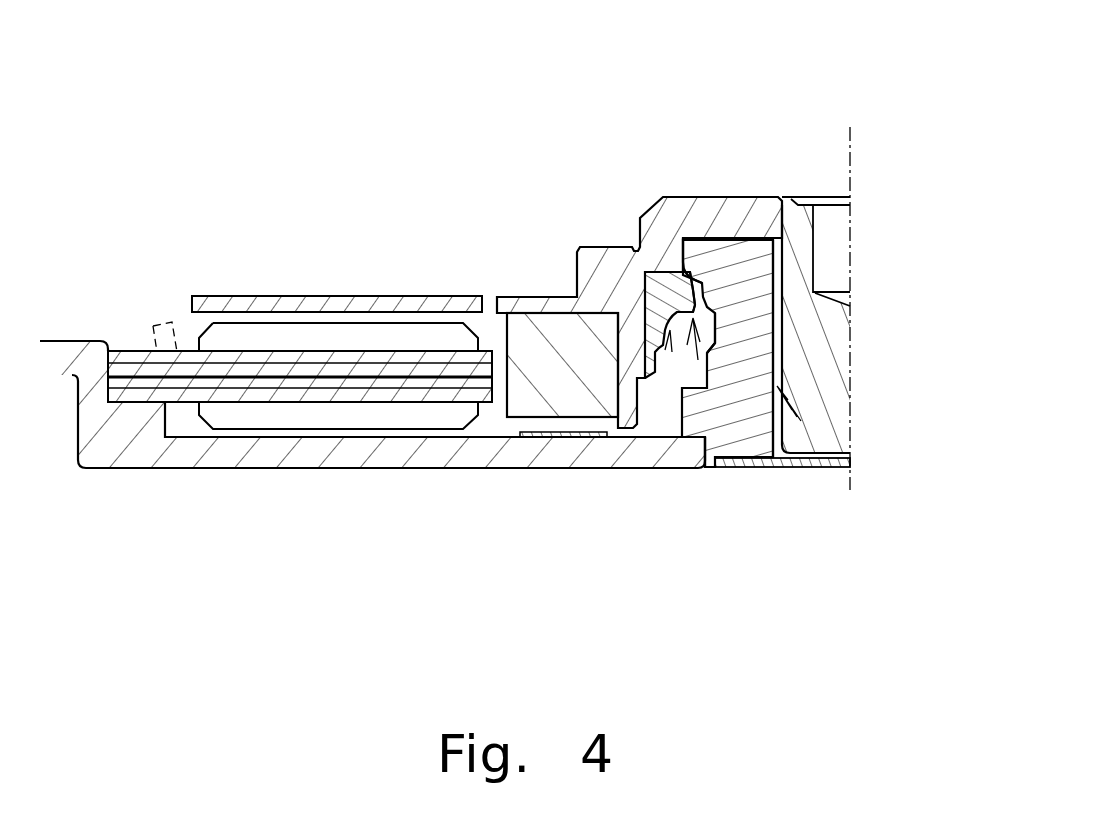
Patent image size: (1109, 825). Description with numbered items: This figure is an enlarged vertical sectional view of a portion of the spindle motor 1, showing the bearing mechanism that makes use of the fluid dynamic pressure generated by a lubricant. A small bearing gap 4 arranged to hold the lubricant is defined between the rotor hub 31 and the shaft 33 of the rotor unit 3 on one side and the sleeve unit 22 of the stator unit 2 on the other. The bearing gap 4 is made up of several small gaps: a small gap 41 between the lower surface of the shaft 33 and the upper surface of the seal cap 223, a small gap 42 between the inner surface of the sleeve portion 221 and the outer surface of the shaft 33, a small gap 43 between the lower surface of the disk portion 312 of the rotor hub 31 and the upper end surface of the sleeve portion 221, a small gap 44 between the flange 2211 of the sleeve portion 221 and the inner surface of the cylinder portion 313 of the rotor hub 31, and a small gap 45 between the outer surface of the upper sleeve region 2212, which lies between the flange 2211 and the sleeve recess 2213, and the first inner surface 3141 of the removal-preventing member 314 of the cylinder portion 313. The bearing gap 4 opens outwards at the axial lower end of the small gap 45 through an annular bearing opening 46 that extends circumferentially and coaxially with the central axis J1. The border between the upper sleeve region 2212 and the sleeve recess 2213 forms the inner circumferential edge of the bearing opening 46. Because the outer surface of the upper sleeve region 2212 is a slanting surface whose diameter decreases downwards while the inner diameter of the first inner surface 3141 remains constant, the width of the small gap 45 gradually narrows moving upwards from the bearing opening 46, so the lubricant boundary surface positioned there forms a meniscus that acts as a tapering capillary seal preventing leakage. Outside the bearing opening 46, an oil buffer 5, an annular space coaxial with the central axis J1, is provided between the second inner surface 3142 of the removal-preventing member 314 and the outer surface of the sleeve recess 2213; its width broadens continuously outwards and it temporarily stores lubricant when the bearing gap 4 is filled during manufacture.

The spindle motor 1 is at (256, 106).
The stator unit 2 is at (771, 403).
The sleeve unit 22 is at (705, 576).
The sleeve portion 221 is at (740, 413).
The flange 2211 is at (683, 242).
The upper sleeve region 2212 is at (723, 295).
The sleeve recess 2213 is at (723, 342).
The seal cap 223 is at (763, 463).
The rotor unit 3 is at (847, 44).
The rotor hub 31 is at (770, 72).
The disk portion 312 is at (768, 197).
The cylinder portion 313 is at (573, 437).
The removal-preventing member 314 is at (677, 300).
The first inner surface 3141 is at (708, 310).
The second inner surface 3142 is at (573, 412).
The shaft 33 is at (813, 197).
The bearing gap 4 is at (733, 370).
The small gap 41 is at (806, 455).
The small gap 42 is at (800, 395).
The small gap 43 is at (735, 221).
The small gap 44 is at (670, 262).
The small gap 45 is at (655, 330).
The bearing opening 46 is at (777, 386).
The oil buffer 5 is at (695, 322).
The central axis J1 is at (852, 177).